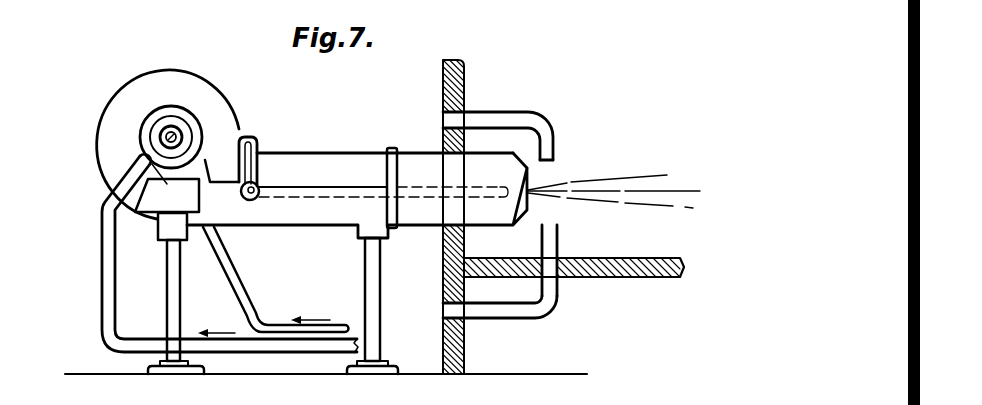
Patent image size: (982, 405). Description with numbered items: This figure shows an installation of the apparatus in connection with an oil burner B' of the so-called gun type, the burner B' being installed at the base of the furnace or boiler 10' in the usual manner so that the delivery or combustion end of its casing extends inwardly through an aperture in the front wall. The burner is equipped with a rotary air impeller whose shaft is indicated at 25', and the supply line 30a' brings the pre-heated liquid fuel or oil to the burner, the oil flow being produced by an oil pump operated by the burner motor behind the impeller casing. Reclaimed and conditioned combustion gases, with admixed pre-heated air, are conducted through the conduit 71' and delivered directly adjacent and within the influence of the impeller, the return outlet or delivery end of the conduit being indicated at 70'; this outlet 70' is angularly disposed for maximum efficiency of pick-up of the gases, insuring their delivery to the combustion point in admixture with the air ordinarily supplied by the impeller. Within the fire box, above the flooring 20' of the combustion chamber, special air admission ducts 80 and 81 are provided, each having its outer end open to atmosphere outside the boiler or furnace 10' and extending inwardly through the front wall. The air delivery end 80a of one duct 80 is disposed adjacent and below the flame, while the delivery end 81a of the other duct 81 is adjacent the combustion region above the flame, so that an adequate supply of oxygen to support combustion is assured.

The oil burner B' is at (153, 143).
The shaft 25' is at (206, 128).
The supply line 30a' is at (276, 227).
The return outlet 70' is at (167, 188).
The conduit 71' is at (209, 253).
The furnace or boiler 10' is at (433, 217).
The air supply duct 81 is at (510, 118).
The delivery end 81a is at (554, 152).
The air delivery end 80a is at (557, 237).
The air supply duct 80 is at (515, 314).
The flooring 20' is at (574, 254).